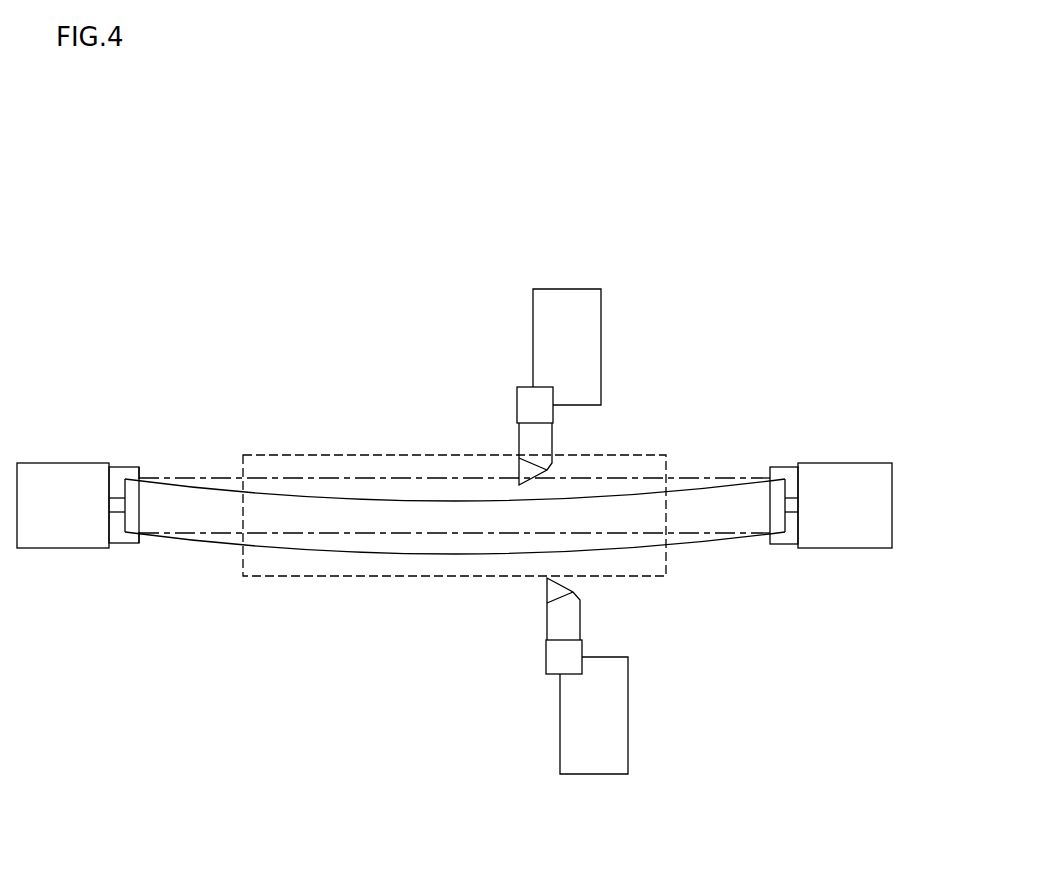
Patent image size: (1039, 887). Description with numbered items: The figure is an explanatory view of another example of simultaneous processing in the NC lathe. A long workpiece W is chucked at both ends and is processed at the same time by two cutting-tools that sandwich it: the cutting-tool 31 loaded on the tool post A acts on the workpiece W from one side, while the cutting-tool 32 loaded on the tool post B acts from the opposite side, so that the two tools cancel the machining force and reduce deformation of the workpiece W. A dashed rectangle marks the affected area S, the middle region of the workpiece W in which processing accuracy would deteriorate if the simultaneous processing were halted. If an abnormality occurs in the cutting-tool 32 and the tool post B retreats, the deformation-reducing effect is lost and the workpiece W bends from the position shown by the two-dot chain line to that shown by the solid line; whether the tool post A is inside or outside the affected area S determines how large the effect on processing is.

The workpiece W is at (208, 488).
The affected area S is at (364, 455).
The tool post A is at (580, 346).
The tool post B is at (610, 717).
The cutting-tool 31 is at (541, 443).
The cutting-tool 32 is at (555, 621).